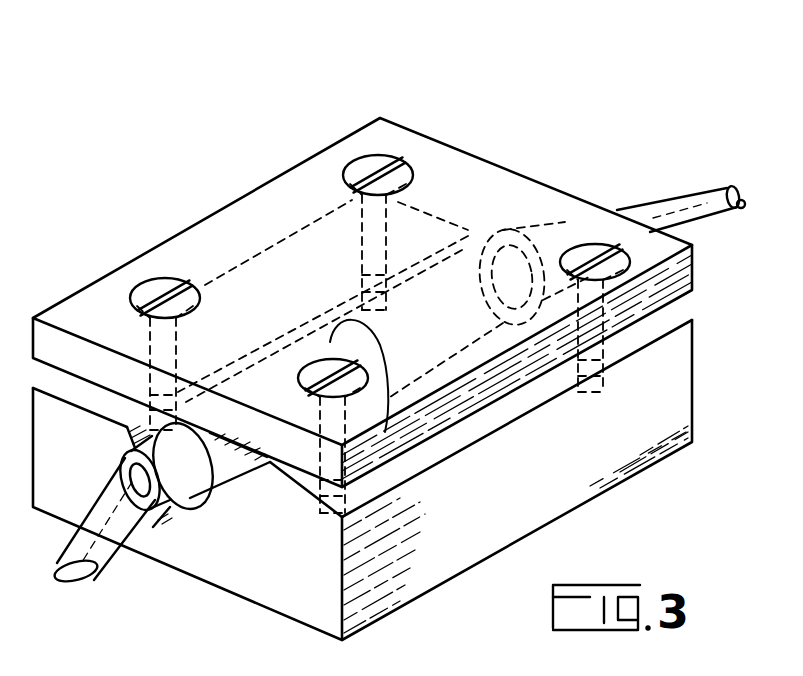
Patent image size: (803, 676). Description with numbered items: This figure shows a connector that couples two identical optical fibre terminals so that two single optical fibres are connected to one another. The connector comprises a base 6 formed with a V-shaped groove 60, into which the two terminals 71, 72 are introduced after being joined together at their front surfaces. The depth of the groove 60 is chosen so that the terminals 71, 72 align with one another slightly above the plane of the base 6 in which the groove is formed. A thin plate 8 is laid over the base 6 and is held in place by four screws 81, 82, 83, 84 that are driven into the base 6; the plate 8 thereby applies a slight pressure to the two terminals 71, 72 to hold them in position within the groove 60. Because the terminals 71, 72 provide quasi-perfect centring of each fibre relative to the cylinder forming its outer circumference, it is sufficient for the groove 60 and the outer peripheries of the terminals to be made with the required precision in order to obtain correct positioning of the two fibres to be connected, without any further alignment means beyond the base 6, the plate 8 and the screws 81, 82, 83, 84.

The thin plate 8 is at (90, 308).
The base 6 is at (525, 498).
The V-shaped groove 60 is at (220, 500).
The terminal 71 is at (467, 245).
The terminal 72 is at (253, 500).
The screw 81 is at (147, 297).
The screw 82 is at (365, 172).
The screw 83 is at (580, 258).
The screw 84 is at (385, 432).